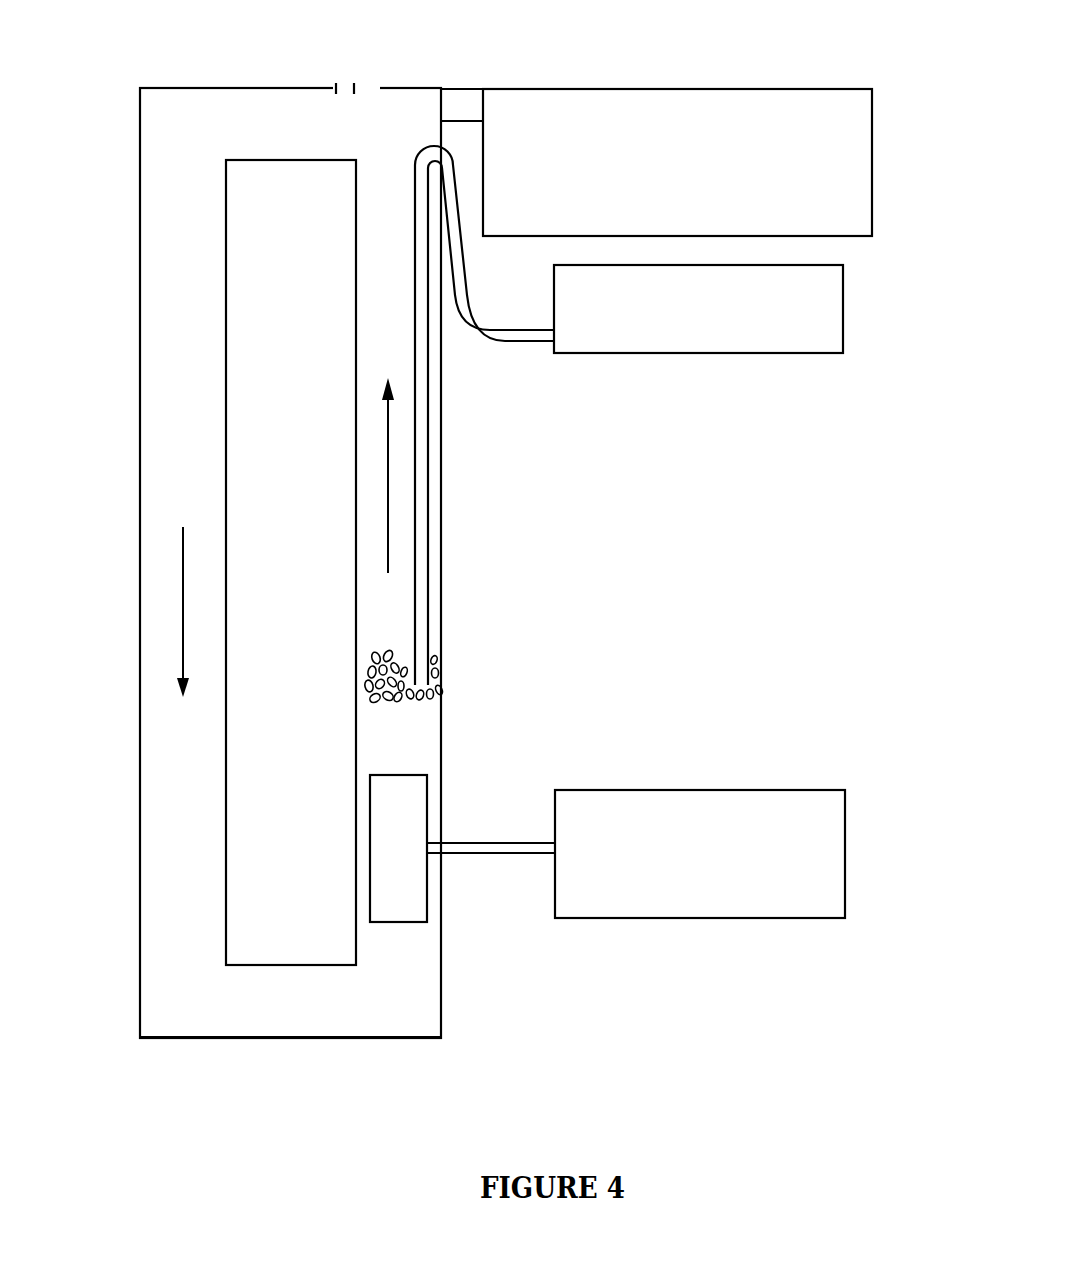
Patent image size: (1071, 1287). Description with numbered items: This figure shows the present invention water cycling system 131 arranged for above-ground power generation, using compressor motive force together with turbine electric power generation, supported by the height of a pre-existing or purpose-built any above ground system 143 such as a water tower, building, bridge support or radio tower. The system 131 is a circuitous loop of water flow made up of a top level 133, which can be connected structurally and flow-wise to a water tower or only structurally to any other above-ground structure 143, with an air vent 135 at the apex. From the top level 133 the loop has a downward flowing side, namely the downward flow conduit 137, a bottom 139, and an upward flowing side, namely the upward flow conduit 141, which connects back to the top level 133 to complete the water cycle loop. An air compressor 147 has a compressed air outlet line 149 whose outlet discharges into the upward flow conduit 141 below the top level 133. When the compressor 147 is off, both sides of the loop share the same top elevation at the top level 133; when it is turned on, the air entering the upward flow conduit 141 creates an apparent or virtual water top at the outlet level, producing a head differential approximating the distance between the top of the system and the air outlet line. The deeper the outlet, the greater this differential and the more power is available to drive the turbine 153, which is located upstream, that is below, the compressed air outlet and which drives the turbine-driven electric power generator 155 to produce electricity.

The water cycling system 131 is at (130, 70).
The top level 133 is at (235, 135).
The air vent 135 is at (345, 84).
The downward flow conduit 137 is at (167, 459).
The bottom 139 is at (248, 1012).
The upward flow conduit 141 is at (393, 624).
The above ground system 143 is at (541, 89).
The air compressor 147 is at (576, 352).
The compressed air outlet line 149 is at (428, 571).
The turbine 153 is at (412, 817).
The turbine-driven electric power generator 155 is at (653, 789).